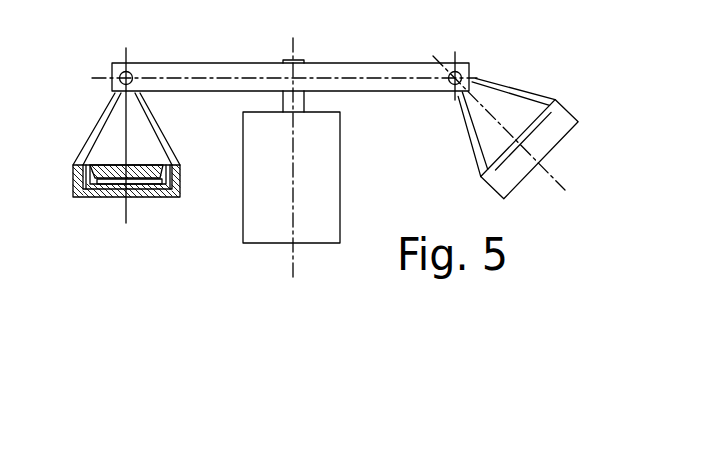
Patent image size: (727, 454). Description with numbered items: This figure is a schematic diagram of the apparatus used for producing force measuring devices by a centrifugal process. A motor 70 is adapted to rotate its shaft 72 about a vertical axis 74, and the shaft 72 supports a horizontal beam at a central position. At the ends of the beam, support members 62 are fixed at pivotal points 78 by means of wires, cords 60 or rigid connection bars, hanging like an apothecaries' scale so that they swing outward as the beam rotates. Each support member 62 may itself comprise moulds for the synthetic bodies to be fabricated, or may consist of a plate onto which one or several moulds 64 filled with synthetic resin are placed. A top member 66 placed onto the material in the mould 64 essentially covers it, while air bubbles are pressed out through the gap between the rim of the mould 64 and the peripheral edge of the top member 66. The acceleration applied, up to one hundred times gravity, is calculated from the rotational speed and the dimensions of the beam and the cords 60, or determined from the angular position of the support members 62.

The cords 60 is at (96, 131).
The support member 62 is at (75, 197).
The mould 64 is at (103, 190).
The top member 66 is at (140, 165).
The motor 70 is at (336, 215).
The shaft 72 is at (300, 103).
The vertical axis 74 is at (293, 40).
The pivotal point 78 is at (132, 73).